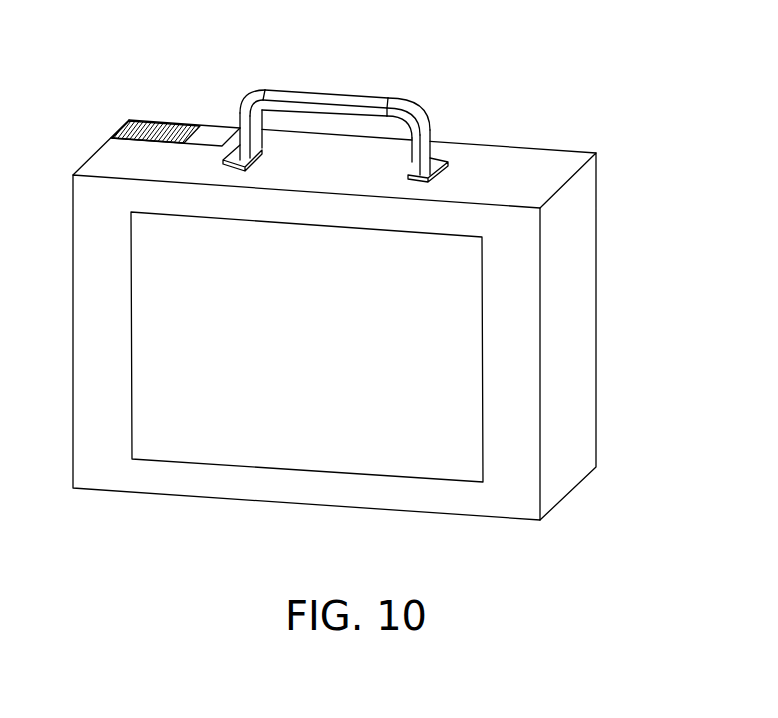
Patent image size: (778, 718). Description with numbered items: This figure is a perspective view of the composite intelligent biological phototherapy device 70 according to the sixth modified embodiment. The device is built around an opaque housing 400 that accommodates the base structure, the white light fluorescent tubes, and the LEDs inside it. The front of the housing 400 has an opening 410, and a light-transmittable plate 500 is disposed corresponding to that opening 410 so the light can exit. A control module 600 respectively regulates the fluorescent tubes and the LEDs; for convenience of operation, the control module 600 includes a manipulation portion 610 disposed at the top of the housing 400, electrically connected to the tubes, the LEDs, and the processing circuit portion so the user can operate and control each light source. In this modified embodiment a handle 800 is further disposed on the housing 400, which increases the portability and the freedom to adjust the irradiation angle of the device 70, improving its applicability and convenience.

The composite intelligent biological phototherapy device 70 is at (95, 60).
The housing 400 is at (578, 303).
The opening 410 is at (157, 210).
The light-transmittable plate 500 is at (332, 353).
The control module 600 is at (210, 130).
The manipulation portion 610 is at (156, 132).
The handle 800 is at (367, 100).